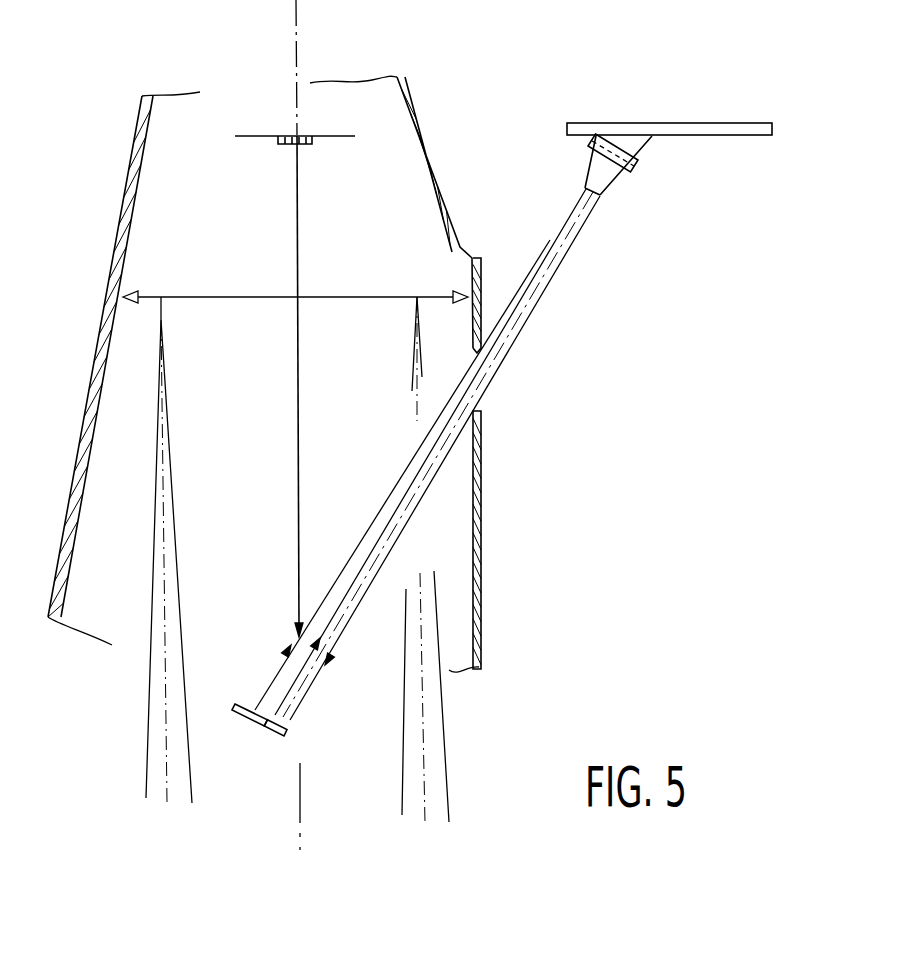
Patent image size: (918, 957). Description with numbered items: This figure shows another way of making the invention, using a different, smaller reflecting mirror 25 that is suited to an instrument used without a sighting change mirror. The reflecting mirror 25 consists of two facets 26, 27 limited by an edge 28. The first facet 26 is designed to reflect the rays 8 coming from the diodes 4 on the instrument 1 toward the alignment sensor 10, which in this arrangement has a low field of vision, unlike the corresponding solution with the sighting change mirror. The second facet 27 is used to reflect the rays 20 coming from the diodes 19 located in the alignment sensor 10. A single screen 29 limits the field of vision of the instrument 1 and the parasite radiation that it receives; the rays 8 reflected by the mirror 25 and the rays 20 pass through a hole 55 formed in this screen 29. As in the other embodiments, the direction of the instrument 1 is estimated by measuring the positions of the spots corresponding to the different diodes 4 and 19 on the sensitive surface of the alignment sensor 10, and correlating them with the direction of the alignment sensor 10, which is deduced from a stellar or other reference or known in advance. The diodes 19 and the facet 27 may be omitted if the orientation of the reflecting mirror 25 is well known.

The instrument 1 is at (297, 35).
The diodes 4 is at (284, 132).
The rays 8 is at (297, 415).
The alignment sensor 10 is at (638, 176).
The diodes 19 is at (621, 172).
The rays 20 is at (372, 566).
The reflecting mirror 25 is at (283, 720).
The facet 26 is at (245, 700).
The facet 27 is at (280, 717).
The edge 28 is at (273, 712).
The screen 29 is at (483, 482).
The hole 55 is at (447, 381).